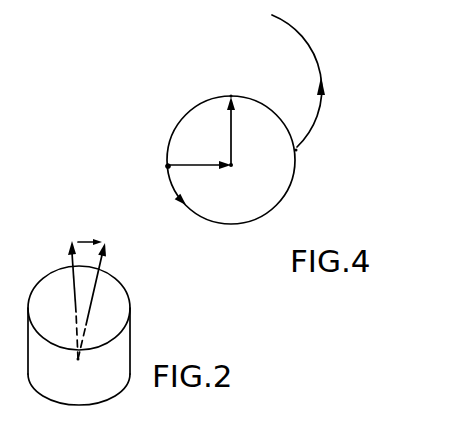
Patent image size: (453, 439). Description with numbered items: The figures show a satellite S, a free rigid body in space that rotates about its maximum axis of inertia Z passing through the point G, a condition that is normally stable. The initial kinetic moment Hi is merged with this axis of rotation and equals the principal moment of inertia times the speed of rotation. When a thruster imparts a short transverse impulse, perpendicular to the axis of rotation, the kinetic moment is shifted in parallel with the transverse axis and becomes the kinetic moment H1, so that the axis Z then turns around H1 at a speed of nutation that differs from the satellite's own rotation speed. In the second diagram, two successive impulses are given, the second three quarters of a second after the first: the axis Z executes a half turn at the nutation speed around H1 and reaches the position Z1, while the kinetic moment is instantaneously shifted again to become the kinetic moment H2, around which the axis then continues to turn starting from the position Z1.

In FIG. 2, the satellite S is at (118, 307).
In FIG. 2, the center of the satellite G is at (86, 371).
In FIG. 4, the initial kinetic moment Hi is at (155, 157).
In FIG. 2, the initial kinetic moment Hi is at (69, 286).
In FIG. 4, the shifted kinetic moment H1 is at (242, 178).
In FIG. 2, the shifted kinetic moment H1 is at (106, 299).
In FIG. 4, the second shifted kinetic moment H2 is at (237, 84).
In FIG. 4, the maximum axis of inertia Z is at (167, 167).
In FIG. 4, the axis position after half turn Z1 is at (297, 149).